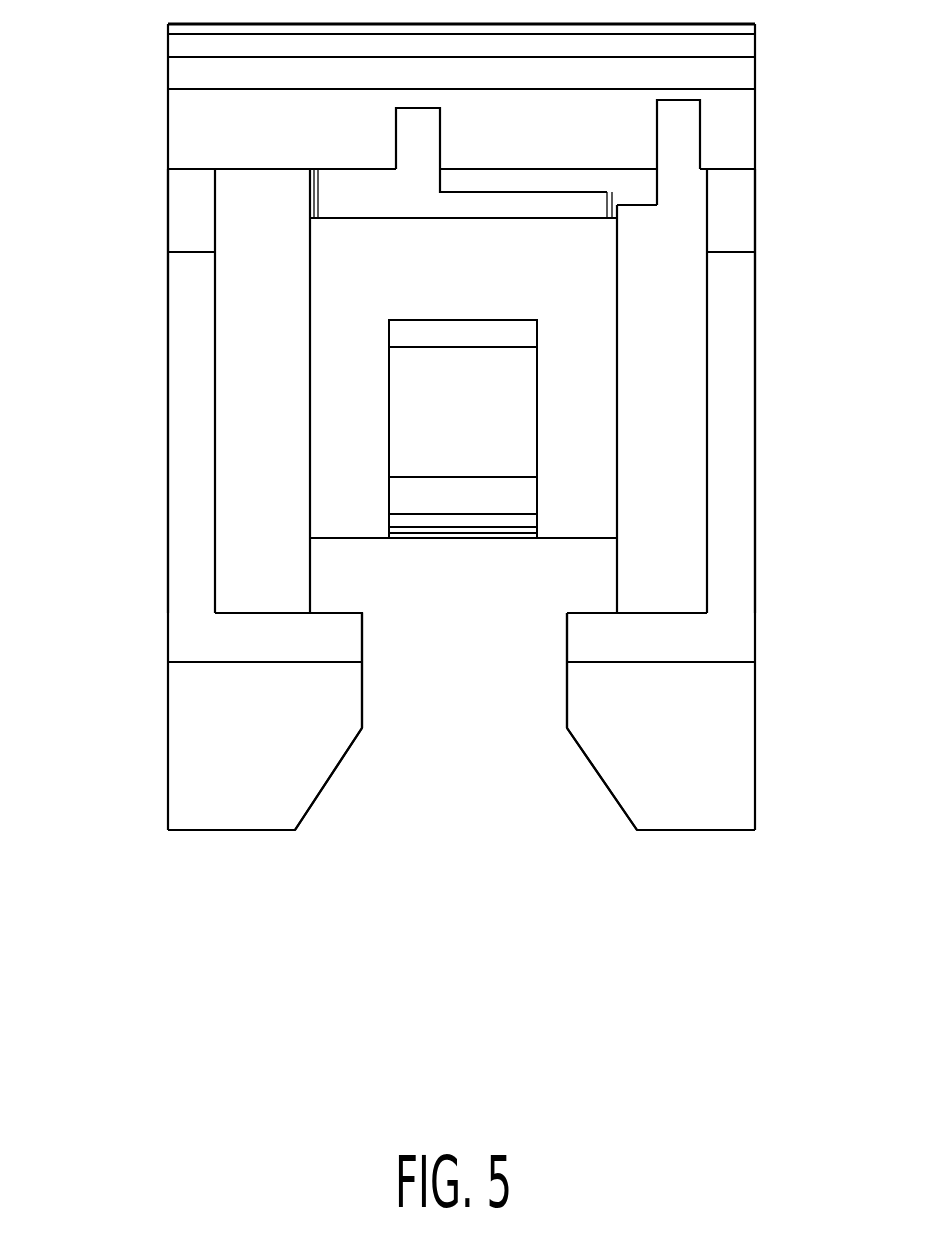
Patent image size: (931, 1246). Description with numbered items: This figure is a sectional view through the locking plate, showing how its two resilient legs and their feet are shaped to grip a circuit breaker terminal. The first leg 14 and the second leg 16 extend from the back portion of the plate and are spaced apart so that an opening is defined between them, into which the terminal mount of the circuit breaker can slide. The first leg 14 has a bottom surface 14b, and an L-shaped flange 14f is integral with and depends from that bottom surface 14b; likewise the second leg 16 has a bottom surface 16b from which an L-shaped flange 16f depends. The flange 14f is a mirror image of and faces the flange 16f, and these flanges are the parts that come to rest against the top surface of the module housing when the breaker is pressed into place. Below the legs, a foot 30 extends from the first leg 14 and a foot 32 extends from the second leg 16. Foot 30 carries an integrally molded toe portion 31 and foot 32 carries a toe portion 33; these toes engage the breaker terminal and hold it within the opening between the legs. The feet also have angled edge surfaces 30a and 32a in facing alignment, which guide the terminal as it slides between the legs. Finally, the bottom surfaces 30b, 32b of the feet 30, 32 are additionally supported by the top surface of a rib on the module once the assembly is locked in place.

The first leg 14 is at (678, 427).
The bottom surface 14b is at (677, 322).
The L-shaped flange 14f is at (741, 496).
The second leg 16 is at (253, 425).
The bottom surface 16b is at (267, 323).
The L-shaped flange 16f is at (194, 501).
The foot 30 is at (717, 742).
The angled edge surface 30a is at (598, 773).
The bottom surface 30b is at (718, 792).
The toe portion 31 is at (572, 617).
The foot 32 is at (220, 748).
The angled edge surface 32a is at (337, 767).
The bottom surface 32b is at (220, 793).
The toe portion 33 is at (353, 622).